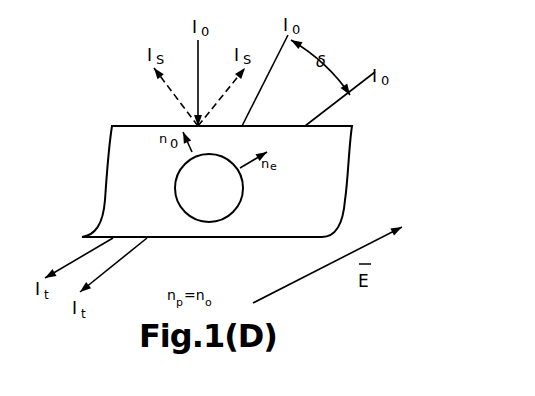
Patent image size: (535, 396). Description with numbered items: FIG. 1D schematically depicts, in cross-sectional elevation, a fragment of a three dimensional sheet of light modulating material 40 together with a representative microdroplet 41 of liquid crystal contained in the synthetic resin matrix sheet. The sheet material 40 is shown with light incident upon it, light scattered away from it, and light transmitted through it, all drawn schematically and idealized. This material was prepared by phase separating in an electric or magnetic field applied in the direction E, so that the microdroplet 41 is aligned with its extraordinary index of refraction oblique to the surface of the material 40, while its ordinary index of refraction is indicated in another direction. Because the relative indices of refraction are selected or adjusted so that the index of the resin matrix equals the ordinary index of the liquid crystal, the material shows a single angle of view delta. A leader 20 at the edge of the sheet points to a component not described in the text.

The optically anisotropic plate 40 is at (318, 175).
The microdroplet 41 is at (222, 190).
The light source / polarizer element 20 is at (0, 370).